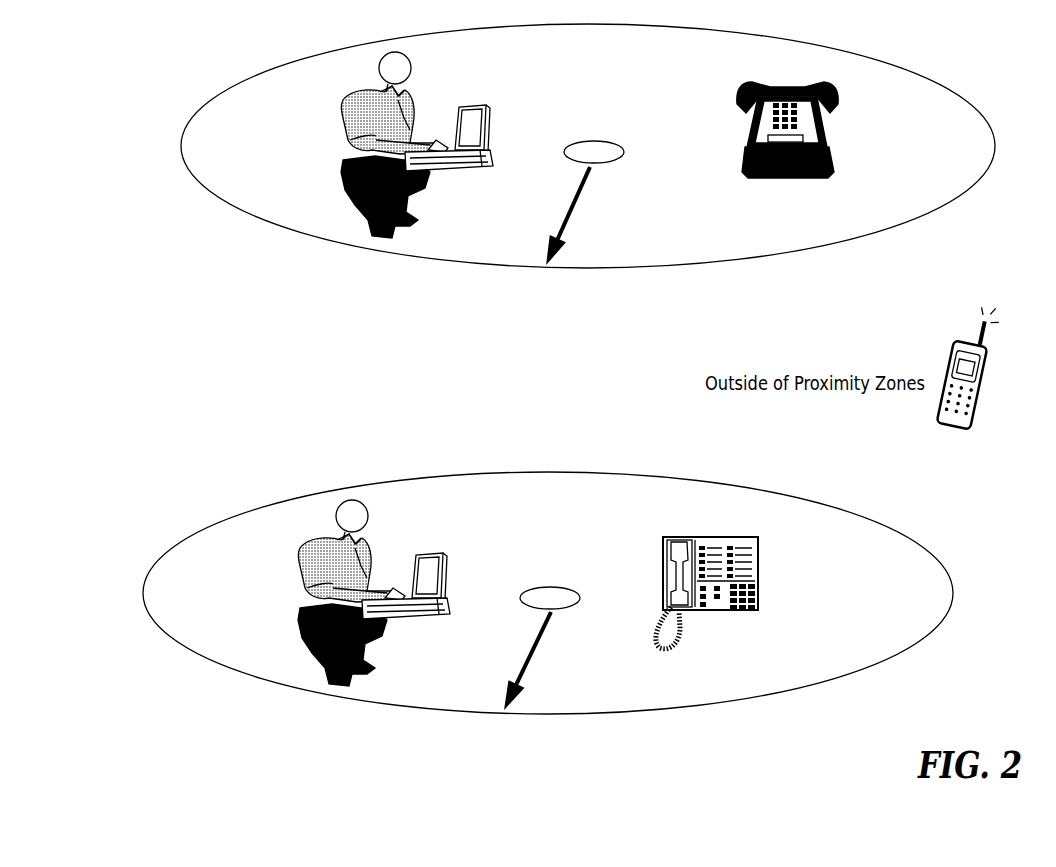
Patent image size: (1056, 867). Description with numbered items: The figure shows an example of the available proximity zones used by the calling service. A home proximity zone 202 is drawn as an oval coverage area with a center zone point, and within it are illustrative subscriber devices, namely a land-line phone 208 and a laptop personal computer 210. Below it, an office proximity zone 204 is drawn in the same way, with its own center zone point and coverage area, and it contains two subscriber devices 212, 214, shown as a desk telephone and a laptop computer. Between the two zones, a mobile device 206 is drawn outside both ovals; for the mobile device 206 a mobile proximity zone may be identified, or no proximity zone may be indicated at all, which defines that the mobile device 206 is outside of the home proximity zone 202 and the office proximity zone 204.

The home proximity zone 202 is at (805, 36).
The office proximity zone 204 is at (777, 485).
The mobile device 206 is at (952, 343).
The land-line phone 208 is at (826, 137).
The laptop personal computer 210 is at (485, 107).
The subscriber device 212 is at (762, 567).
The subscriber device 214 is at (432, 550).